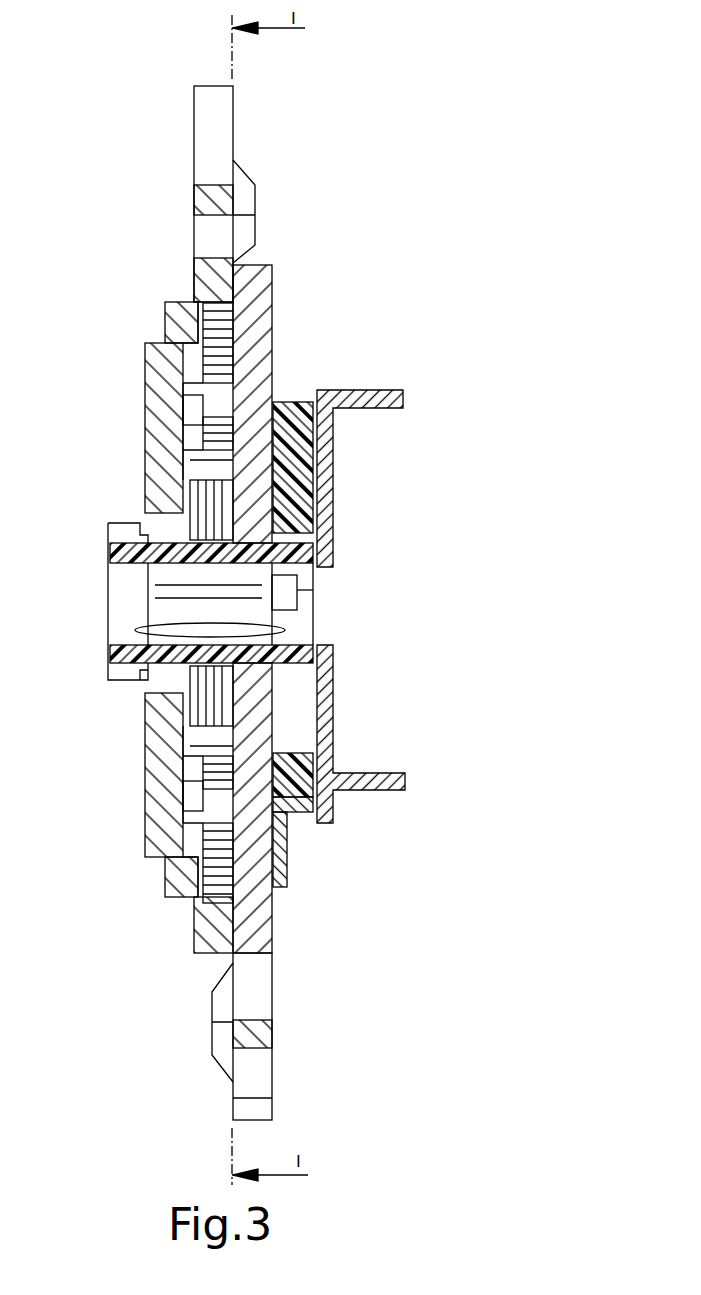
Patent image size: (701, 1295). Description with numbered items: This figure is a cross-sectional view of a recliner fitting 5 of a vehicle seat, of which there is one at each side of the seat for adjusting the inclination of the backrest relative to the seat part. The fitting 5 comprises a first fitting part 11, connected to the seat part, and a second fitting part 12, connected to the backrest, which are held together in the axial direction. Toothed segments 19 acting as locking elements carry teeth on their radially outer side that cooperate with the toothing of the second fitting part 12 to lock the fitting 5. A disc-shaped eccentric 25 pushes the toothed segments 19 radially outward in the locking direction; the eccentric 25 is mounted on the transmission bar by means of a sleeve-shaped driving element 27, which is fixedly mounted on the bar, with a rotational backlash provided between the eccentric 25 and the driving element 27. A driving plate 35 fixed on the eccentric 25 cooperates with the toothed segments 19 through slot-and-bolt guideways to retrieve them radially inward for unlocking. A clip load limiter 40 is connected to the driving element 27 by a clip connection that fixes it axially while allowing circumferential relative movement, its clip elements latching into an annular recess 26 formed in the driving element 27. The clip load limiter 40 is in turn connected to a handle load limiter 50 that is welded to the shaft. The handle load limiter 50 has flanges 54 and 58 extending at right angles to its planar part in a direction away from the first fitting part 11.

The fitting 5 is at (143, 430).
The first fitting part 11 is at (253, 818).
The second fitting part 12 is at (180, 327).
The toothed segment 19 is at (262, 322).
The eccentric 25 is at (237, 700).
The annular recess 26 is at (292, 405).
The driving element 27 is at (322, 520).
The driving plate 35 is at (205, 762).
The clip load limiter 40 is at (297, 470).
The handle load limiter 50 is at (333, 527).
The flange 54 is at (382, 410).
The flange 58 is at (378, 792).